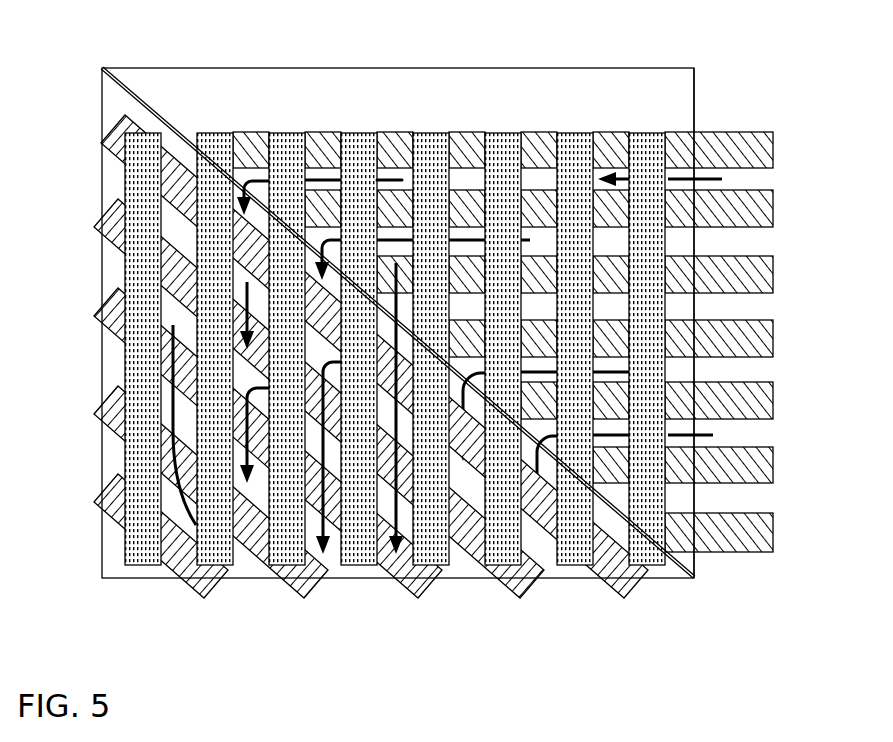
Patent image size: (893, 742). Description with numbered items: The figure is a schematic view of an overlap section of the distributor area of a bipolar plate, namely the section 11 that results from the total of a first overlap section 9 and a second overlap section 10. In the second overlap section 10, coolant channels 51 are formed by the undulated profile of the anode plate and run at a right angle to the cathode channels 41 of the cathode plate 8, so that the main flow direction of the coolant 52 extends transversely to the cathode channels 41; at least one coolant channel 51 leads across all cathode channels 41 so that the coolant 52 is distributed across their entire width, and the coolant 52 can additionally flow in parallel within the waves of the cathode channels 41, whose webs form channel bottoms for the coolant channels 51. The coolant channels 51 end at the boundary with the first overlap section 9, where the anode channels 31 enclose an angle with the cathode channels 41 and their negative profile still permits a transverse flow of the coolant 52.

The cathode plate 8 is at (369, 305).
The section 11 is at (399, 321).
The first overlap section 9 is at (120, 578).
The second overlap section 10 is at (694, 90).
The anode channels 31 is at (303, 587).
The cathode channels 41 is at (580, 546).
The coolant channels 51 is at (750, 250).
The coolant 52 is at (178, 502).